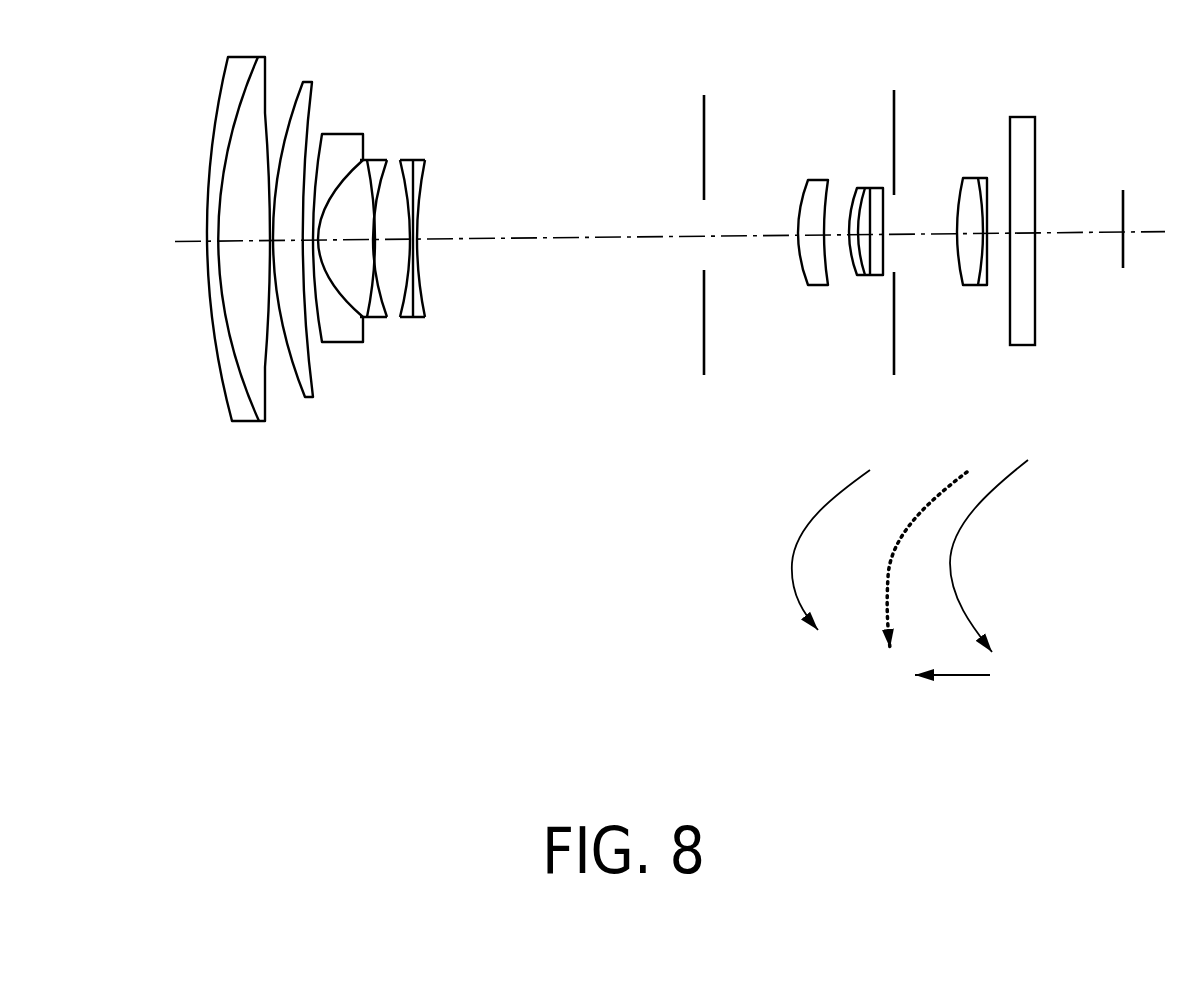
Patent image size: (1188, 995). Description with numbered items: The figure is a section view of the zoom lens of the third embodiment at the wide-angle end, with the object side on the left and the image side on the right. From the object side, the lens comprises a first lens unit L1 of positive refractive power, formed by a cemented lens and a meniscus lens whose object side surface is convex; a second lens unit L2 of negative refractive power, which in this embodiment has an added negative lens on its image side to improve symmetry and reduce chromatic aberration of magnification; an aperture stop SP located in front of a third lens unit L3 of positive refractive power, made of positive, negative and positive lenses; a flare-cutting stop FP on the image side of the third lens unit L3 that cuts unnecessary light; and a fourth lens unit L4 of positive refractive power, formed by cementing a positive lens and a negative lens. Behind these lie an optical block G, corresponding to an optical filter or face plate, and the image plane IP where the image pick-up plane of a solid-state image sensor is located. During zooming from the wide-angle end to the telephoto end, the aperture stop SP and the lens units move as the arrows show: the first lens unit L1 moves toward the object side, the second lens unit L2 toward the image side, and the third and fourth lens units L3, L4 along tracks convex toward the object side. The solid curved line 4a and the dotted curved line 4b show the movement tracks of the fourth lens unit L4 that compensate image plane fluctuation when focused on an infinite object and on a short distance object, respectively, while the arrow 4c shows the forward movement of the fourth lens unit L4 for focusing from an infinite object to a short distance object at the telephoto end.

The first lens unit L1 is at (198, 647).
The second lens unit L2 is at (560, 645).
The third lens unit L3 is at (900, 372).
The fourth lens unit L4 is at (1042, 380).
The aperture stop SP is at (768, 630).
The flare-cutting stop FP is at (897, 140).
The optical block G is at (1021, 140).
The image plane IP is at (1125, 215).
The solid curved line 4a is at (966, 556).
The dotted curved line 4b is at (834, 550).
The arrow 4c is at (952, 710).